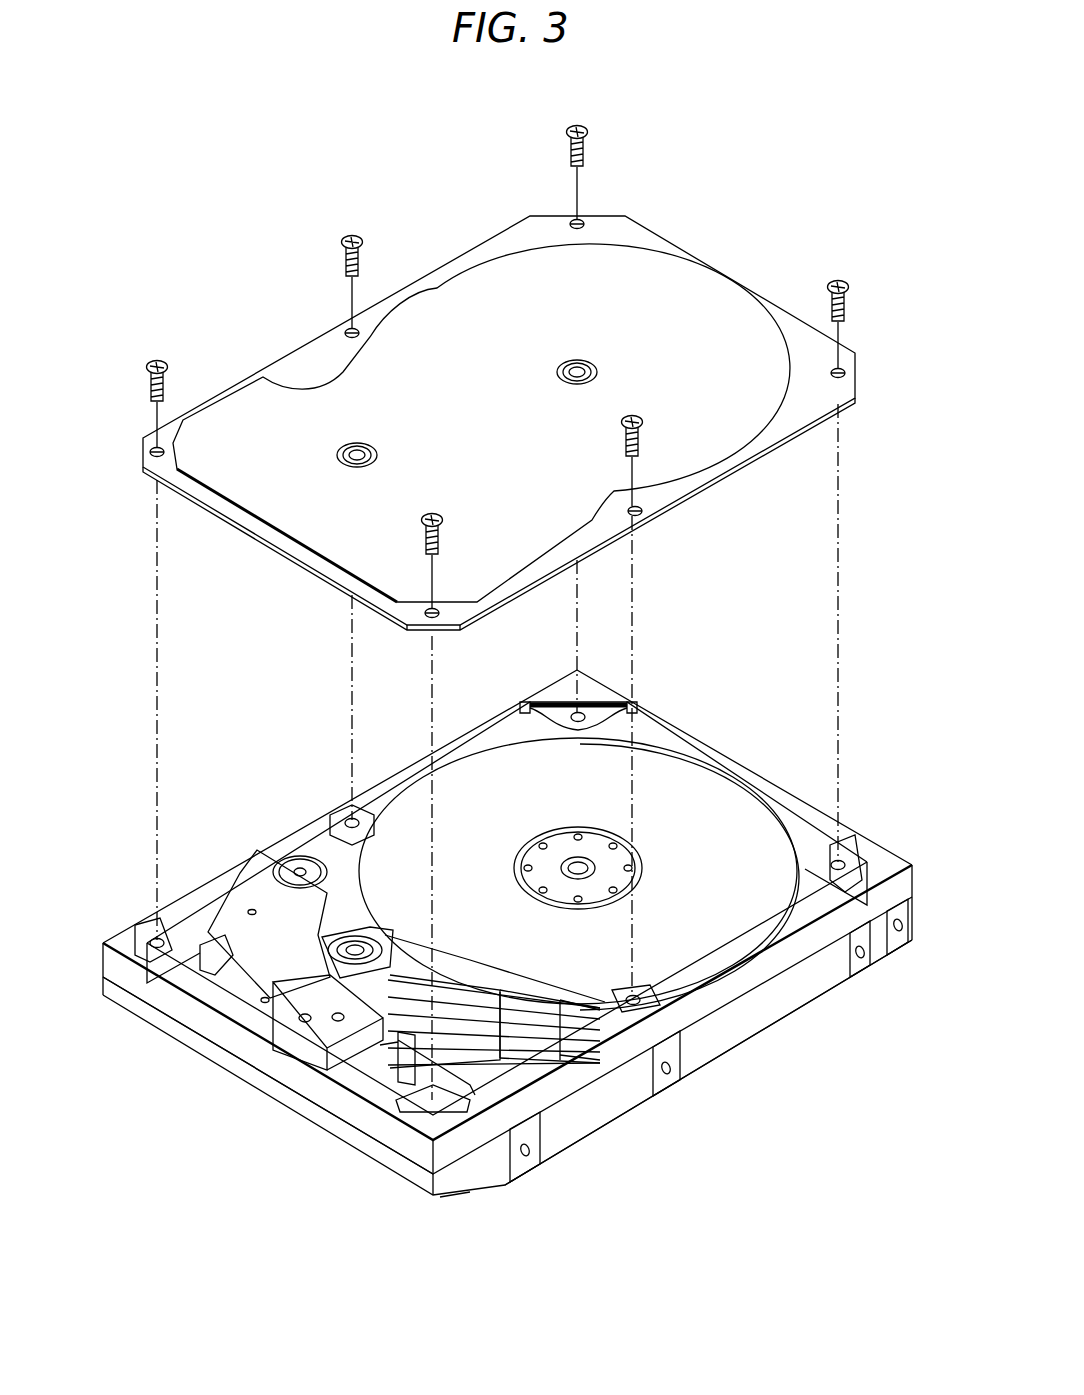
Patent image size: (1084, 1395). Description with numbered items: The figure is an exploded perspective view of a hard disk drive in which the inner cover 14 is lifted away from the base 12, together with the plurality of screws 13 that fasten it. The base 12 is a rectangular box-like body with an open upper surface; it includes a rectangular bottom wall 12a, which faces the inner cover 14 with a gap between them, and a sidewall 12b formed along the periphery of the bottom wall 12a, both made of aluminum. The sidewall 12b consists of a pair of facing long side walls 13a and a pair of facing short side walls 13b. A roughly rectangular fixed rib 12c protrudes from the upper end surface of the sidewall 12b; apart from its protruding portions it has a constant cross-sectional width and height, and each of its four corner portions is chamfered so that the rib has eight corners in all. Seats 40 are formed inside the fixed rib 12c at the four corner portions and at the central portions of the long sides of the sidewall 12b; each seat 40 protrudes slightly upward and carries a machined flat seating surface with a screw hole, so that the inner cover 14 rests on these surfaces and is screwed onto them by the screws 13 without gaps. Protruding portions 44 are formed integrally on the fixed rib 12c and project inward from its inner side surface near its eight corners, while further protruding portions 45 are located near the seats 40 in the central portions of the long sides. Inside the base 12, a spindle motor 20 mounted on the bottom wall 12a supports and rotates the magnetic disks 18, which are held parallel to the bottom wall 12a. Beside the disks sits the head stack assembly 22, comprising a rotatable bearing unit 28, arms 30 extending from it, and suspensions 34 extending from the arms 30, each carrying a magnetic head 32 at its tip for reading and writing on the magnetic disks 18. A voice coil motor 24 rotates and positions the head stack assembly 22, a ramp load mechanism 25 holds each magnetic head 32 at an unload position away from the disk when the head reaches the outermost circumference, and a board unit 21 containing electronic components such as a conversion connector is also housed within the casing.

The base 12 is at (703, 1047).
The bottom wall 12a is at (493, 1077).
The sidewall 12b is at (603, 1113).
The fixed rib 12c is at (680, 730).
The screws 13 is at (584, 127).
The long side walls 13a is at (745, 1030).
The short side walls 13b is at (292, 1075).
The inner cover 14 is at (692, 290).
The magnetic disks 18 is at (697, 808).
The spindle motor 20 is at (535, 858).
The board unit 21 is at (370, 1100).
The head stack assembly 22 is at (460, 968).
The voice coil motor 24 is at (257, 977).
The ramp load mechanism 25 is at (620, 988).
The bearing unit 28 is at (378, 946).
The arms 30 is at (458, 960).
The magnetic heads 32 is at (585, 1000).
The suspensions 34 is at (550, 996).
The seats 40 is at (567, 722).
The protruding portions 44 is at (530, 700).
The protruding portions 45 is at (335, 813).